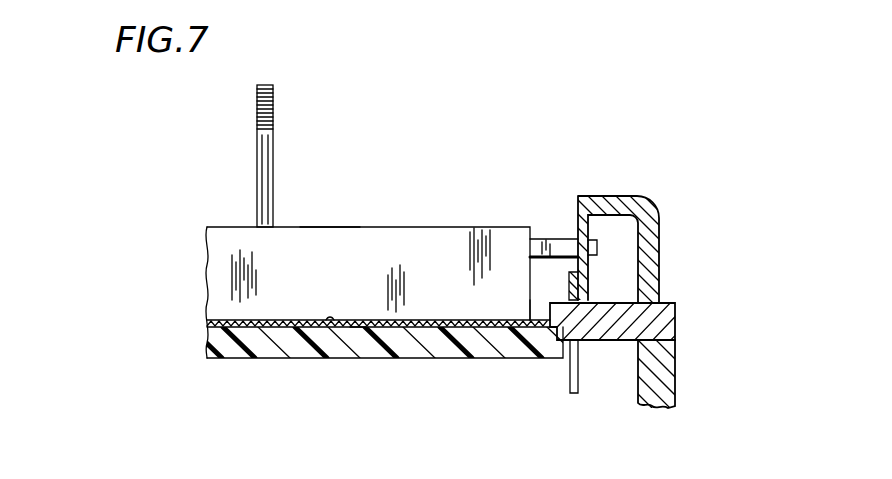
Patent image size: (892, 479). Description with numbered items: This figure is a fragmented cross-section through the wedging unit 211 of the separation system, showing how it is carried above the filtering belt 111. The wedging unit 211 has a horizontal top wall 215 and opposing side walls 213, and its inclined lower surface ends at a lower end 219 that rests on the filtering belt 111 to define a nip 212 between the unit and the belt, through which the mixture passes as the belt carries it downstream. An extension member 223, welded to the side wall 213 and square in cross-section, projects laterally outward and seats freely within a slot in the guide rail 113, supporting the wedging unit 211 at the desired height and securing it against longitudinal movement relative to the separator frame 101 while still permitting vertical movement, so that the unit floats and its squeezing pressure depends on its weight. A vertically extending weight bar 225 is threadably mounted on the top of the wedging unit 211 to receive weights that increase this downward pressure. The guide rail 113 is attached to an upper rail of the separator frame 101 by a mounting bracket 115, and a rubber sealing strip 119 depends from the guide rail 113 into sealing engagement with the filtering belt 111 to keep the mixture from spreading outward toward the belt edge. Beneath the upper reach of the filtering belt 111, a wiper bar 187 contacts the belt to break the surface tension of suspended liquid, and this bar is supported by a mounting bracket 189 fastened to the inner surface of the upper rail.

The separator frame 101 is at (676, 352).
The filtering belt 111 is at (258, 327).
The guide rail 113 is at (590, 222).
The mounting bracket 115 is at (659, 236).
The rubber sealing strip 119 is at (587, 299).
The wiper bar 187 is at (482, 358).
The mounting bracket 189 is at (579, 372).
The wedging unit 211 is at (412, 220).
The nip 212 is at (328, 323).
The side wall 213 is at (535, 300).
The horizontal top wall 215 is at (332, 226).
The lower end of inclined lower surface 219 is at (358, 323).
The extension member 223 is at (543, 237).
The weight bar 225 is at (276, 125).